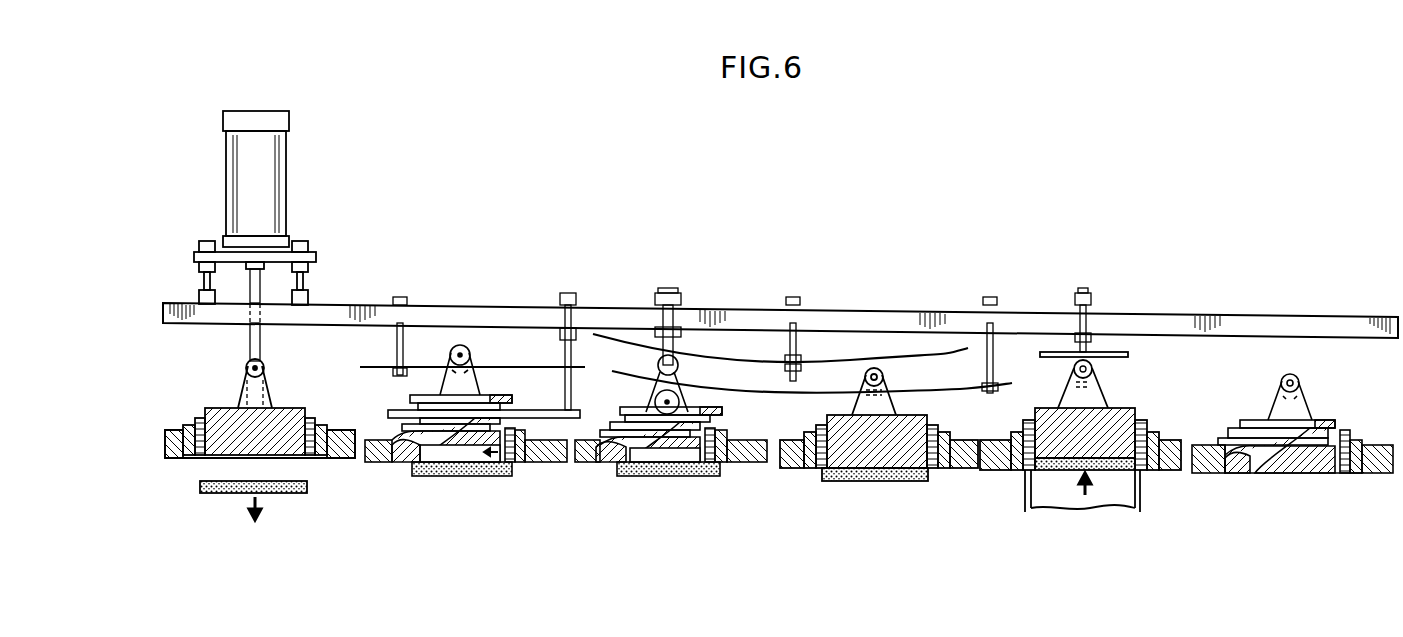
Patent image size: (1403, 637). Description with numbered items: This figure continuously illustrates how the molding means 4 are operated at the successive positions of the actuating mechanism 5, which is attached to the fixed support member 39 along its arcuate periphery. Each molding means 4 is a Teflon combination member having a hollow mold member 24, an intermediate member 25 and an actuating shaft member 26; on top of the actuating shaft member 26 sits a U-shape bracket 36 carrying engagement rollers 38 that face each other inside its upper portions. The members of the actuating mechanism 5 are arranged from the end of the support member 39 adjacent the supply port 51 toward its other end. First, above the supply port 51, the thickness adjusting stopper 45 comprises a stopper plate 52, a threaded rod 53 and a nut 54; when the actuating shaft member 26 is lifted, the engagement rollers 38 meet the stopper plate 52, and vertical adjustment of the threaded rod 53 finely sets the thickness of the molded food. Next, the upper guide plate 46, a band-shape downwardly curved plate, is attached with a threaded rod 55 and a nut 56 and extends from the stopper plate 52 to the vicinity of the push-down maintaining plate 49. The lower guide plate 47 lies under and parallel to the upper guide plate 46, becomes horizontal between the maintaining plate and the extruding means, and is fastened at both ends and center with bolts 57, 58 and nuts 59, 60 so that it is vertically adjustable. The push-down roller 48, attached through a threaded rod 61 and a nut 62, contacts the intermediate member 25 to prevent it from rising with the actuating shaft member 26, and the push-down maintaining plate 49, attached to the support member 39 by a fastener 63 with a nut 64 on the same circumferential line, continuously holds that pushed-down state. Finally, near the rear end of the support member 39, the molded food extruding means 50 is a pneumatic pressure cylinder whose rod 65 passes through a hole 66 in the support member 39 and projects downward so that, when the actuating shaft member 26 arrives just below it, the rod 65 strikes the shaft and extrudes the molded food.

The molding means 4 is at (1305, 480).
The actuating mechanism 5 is at (1285, 355).
The hollow mold member 24 is at (1145, 470).
The intermediate member 25 is at (1127, 466).
The actuating shaft member 26 is at (1097, 442).
The U-shape bracket 36 is at (1095, 392).
The engagement rollers 38 is at (1093, 369).
The support member 39 is at (1270, 326).
The thickness adjusting stopper 45 is at (1115, 340).
The upper guide plate 46 is at (850, 360).
The lower guide plate 47 is at (767, 394).
The push-down roller 48 is at (655, 420).
The push-down maintaining plate 49 is at (550, 438).
The molded food extruding means 50 is at (320, 208).
The supply port 51 is at (1048, 490).
The stopper plate 52 is at (1050, 352).
The threaded rod 53 is at (1082, 294).
The nut 54 is at (1088, 333).
The threaded rod 55 is at (800, 300).
The nut 56 is at (790, 300).
The bolt 57 is at (990, 298).
The bolt 58 is at (398, 297).
The nut 59 is at (985, 298).
The nut 60 is at (403, 298).
The threaded rod 61 is at (660, 334).
The nut 62 is at (668, 292).
The bolt 63 is at (595, 278).
The nut 64 is at (560, 294).
The rod 65 is at (262, 346).
The hole 66 is at (248, 330).